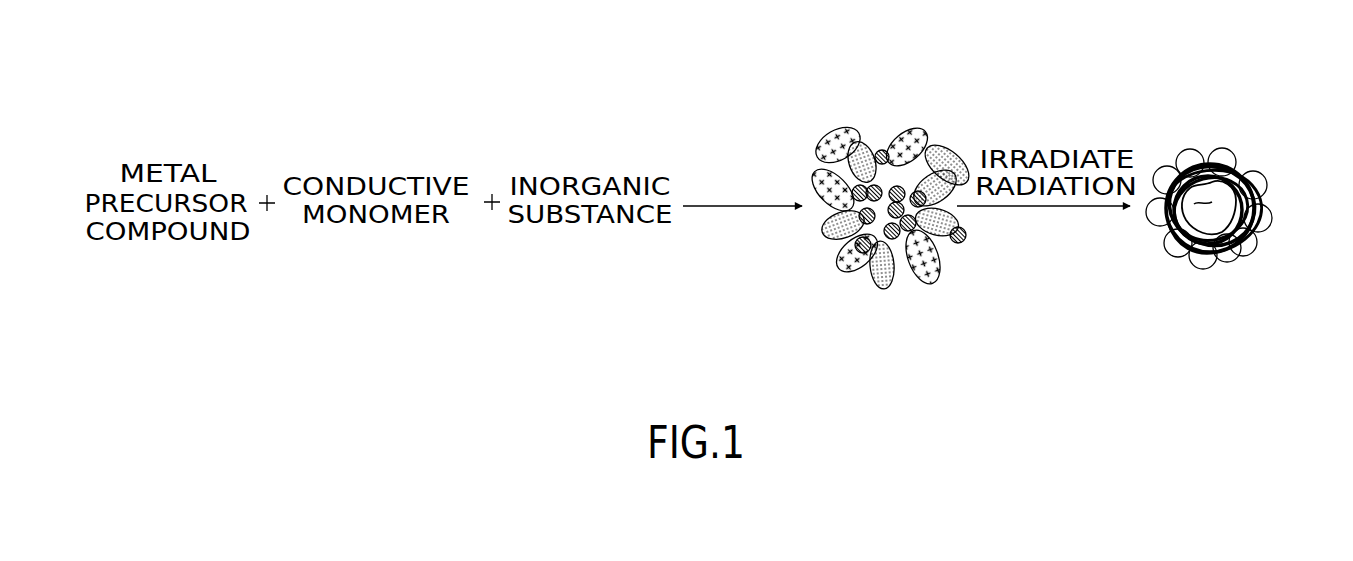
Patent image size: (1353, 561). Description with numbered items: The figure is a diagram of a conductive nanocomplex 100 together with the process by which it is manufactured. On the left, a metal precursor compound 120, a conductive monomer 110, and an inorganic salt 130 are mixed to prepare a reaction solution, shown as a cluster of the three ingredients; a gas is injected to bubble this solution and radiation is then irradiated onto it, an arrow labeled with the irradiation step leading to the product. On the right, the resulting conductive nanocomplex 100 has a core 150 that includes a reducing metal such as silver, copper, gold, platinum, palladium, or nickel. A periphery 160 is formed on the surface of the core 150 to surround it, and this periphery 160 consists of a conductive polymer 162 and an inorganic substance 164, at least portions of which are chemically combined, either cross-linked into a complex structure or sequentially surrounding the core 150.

The conductive nanocomplex 100 is at (1244, 206).
The conductive monomer 110 is at (862, 150).
The metal precursor compound 120 is at (930, 278).
The inorganic salt 130 is at (908, 259).
The core 150 is at (1214, 213).
The periphery 160 is at (1221, 276).
The conductive polymer 162 is at (1218, 255).
The inorganic substance 164 is at (1175, 248).